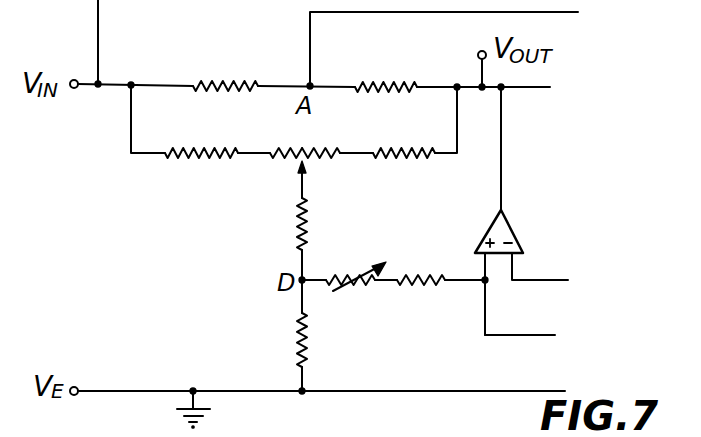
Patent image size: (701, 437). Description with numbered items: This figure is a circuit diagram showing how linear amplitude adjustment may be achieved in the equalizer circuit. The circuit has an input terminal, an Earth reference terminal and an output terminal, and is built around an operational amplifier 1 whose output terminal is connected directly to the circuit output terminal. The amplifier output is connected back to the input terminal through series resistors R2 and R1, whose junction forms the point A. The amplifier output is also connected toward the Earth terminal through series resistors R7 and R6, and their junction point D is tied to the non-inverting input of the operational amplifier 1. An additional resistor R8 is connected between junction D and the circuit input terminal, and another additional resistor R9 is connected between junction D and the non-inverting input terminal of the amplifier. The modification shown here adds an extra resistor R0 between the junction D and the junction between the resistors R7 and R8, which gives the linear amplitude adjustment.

The operational amplifier 1 is at (513, 233).
The resistor R1 is at (225, 71).
The resistor R2 is at (386, 71).
The resistor R6 is at (321, 341).
The resistor R7 is at (437, 165).
The additional resistor R8 is at (295, 165).
The additional resistor R9 is at (447, 294).
The extra resistor R0 is at (320, 224).